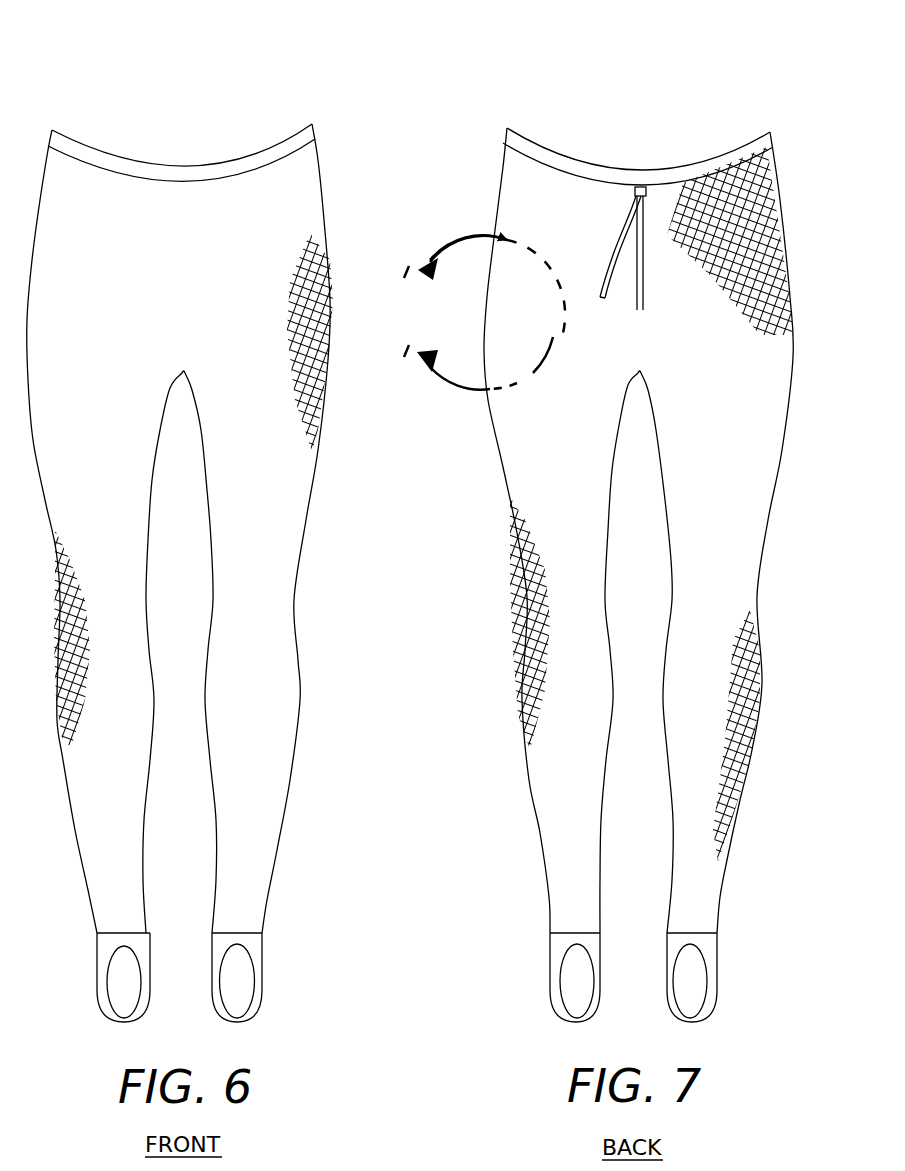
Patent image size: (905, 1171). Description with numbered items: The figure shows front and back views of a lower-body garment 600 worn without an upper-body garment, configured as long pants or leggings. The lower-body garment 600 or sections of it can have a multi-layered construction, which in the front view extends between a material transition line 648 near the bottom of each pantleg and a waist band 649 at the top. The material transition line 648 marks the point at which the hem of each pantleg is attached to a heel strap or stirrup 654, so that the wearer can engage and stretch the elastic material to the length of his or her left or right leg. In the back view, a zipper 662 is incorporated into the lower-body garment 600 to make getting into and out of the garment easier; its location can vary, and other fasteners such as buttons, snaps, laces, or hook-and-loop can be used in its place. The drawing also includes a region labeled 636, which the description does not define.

In FIG. 6, the lower-body garment 600 is at (140, 150).
In FIG. 7, the lower-body garment 600 is at (800, 150).
In FIG. 6, the waist band 649 is at (243, 160).
In FIG. 7, the waist band 649 is at (613, 173).
In FIG. 6, the compression zones of leg portions 636 is at (237, 452).
In FIG. 7, the compression zones of leg portions 636 is at (574, 615).
In FIG. 6, the material transition line 648 is at (234, 932).
In FIG. 7, the material transition line 648 is at (577, 932).
In FIG. 6, the heel strap or stirrup 654 is at (234, 985).
In FIG. 7, the heel strap or stirrup 654 is at (580, 988).
In FIG. 7, the zipper 662 is at (637, 285).